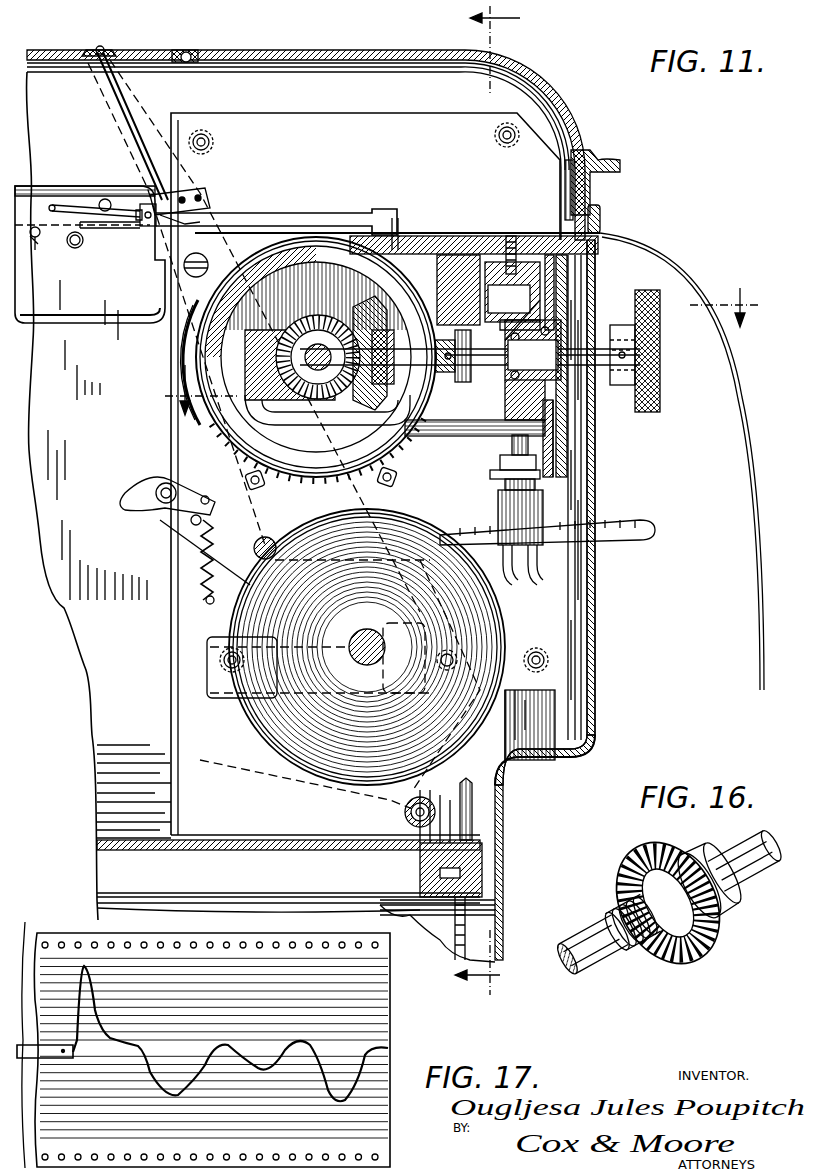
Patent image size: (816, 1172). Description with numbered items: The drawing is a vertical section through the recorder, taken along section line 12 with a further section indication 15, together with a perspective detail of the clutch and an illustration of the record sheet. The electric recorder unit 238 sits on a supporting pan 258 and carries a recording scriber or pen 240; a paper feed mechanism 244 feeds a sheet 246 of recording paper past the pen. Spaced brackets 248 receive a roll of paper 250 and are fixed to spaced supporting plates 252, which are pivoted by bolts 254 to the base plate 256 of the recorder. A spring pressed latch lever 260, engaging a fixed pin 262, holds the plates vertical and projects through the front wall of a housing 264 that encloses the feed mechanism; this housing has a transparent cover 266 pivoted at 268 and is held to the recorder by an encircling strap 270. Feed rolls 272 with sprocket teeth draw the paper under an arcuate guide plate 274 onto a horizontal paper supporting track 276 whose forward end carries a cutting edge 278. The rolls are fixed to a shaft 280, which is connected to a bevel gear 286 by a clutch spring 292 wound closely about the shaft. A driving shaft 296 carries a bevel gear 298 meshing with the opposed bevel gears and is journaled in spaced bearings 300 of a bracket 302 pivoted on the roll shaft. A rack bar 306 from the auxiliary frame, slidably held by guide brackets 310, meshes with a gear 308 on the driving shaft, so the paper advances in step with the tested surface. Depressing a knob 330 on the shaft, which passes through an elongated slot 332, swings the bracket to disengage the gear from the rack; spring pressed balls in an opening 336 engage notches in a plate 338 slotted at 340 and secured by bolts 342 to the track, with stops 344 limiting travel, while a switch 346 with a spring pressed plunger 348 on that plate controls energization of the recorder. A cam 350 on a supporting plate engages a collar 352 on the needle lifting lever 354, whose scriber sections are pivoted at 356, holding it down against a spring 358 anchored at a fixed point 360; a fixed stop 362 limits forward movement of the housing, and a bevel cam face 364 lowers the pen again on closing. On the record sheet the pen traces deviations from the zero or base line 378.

In FIG. 11, the section line 12- 12 is at (491, 500).
In FIG. 11, the section line 15- 15 is at (463, 351).
In FIG. 11, the electric recorder unit 238 is at (600, 128).
In FIG. 11, the recording scriber or pen 240 is at (272, 213).
In FIG. 17, the recording scriber or pen 240 is at (206, 1035).
In FIG. 11, the paper feed mechanism 244 is at (168, 432).
In FIG. 11, the sheet of recording paper 246 is at (690, 262).
In FIG. 17, the sheet of recording paper 246 is at (383, 988).
In FIG. 11, the spaced brackets 248 is at (370, 690).
In FIG. 11, the roll of paper 250 is at (486, 614).
In FIG. 11, the spaced supporting plates 252 is at (195, 630).
In FIG. 11, the bolts 254 is at (402, 814).
In FIG. 11, the base plate 256 is at (142, 850).
In FIG. 11, the supporting pan or base 258 is at (505, 896).
In FIG. 11, the spring pressed latch lever 260 is at (462, 522).
In FIG. 11, the fixed pin 262 is at (165, 505).
In FIG. 11, the housing 264 is at (598, 600).
In FIG. 11, the transparent window or pivoted cover 266 is at (548, 78).
In FIG. 11, the pivot 268 is at (190, 64).
In FIG. 11, the encircling strap 270 is at (112, 50).
In FIG. 11, the feed rolls 272 is at (290, 470).
In FIG. 11, the arcuate guide plate 274 is at (198, 338).
In FIG. 11, the paper supporting track or guide 276 is at (442, 236).
In FIG. 11, the cutting edge 278 is at (602, 220).
In FIG. 11, the shaft 280 is at (312, 340).
In FIG. 16, the shaft 280 is at (598, 975).
In FIG. 11, the bevel gear 286 is at (318, 420).
In FIG. 16, the bevel gear 286 is at (710, 928).
In FIG. 16, the clutch spring 292 is at (628, 945).
In FIG. 11, the driving shaft 296 is at (562, 325).
In FIG. 11, the bevel gear 298 is at (370, 310).
In FIG. 11, the spaced bearings 300 is at (352, 330).
In FIG. 11, the bracket 302 is at (432, 436).
In FIG. 11, the rack bar 306 is at (512, 292).
In FIG. 11, the gear 308 is at (516, 314).
In FIG. 11, the guide brackets 310 is at (470, 255).
In FIG. 11, the manually operable knob 330 is at (655, 412).
In FIG. 11, the elongated slot 332 is at (661, 380).
In FIG. 11, the opening 336 is at (556, 300).
In FIG. 11, the plate 338 is at (555, 452).
In FIG. 11, the slot 340 is at (548, 388).
In FIG. 11, the bolts 342 is at (512, 236).
In FIG. 11, the stops 344 is at (568, 290).
In FIG. 11, the switch 346 is at (540, 510).
In FIG. 11, the spring pressed plunger 348 is at (512, 448).
In FIG. 11, the cam 350 is at (180, 195).
In FIG. 11, the collar 352 is at (148, 228).
In FIG. 11, the needle lifting lever or wire 354 is at (68, 205).
In FIG. 11, the pivot 356 is at (38, 251).
In FIG. 11, the spring 358 is at (103, 228).
In FIG. 11, the fixed point 360 is at (75, 248).
In FIG. 11, the fixed stop 362 is at (474, 805).
In FIG. 11, the bevel cam face 364 is at (140, 206).
In FIG. 17, the zero or base line 378 is at (380, 1048).